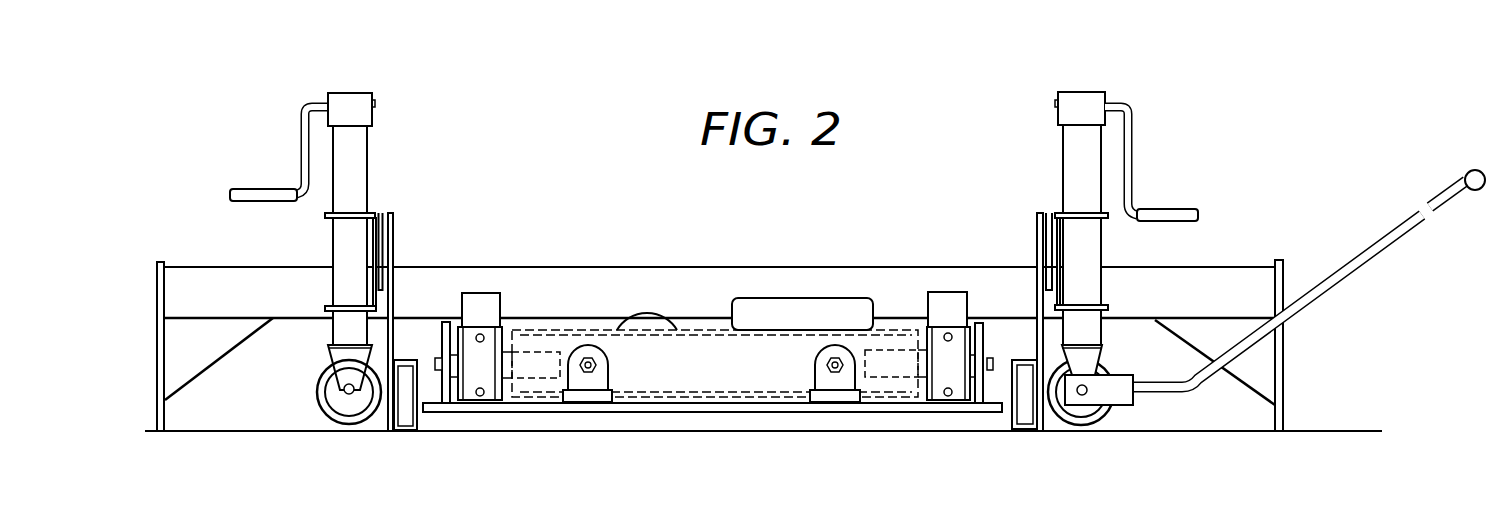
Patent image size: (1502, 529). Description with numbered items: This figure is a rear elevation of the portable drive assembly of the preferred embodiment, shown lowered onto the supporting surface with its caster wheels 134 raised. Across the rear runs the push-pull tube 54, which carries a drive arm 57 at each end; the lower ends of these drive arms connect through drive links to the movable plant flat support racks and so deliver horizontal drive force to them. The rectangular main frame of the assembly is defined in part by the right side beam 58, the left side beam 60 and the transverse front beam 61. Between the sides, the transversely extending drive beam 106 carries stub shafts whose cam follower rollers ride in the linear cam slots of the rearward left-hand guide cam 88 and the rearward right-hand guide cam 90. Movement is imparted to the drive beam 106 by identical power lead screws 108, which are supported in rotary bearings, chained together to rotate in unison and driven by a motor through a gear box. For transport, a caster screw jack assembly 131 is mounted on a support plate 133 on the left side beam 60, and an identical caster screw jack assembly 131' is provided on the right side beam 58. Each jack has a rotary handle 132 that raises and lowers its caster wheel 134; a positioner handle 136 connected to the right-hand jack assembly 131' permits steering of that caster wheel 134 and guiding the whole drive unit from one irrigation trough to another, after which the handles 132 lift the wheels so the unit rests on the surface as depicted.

The push-pull tube 54 is at (722, 266).
The drive arm 57 is at (164, 362).
The right side beam 58 is at (1012, 414).
The left side beam 60 is at (418, 417).
The transverse front beam 61 is at (813, 414).
The rearward left-hand guide cam 88 is at (443, 333).
The rearward right-hand guide cam 90 is at (983, 330).
The drive beam 106 is at (717, 382).
The power lead screw 108 is at (596, 361).
The caster screw jack assembly 131 is at (380, 241).
The caster screw jack assembly 131' is at (1050, 233).
The rotary handle 132 is at (301, 152).
The support plate 133 is at (395, 308).
The caster wheel 134 is at (327, 407).
The positioner handle 136 is at (1317, 287).